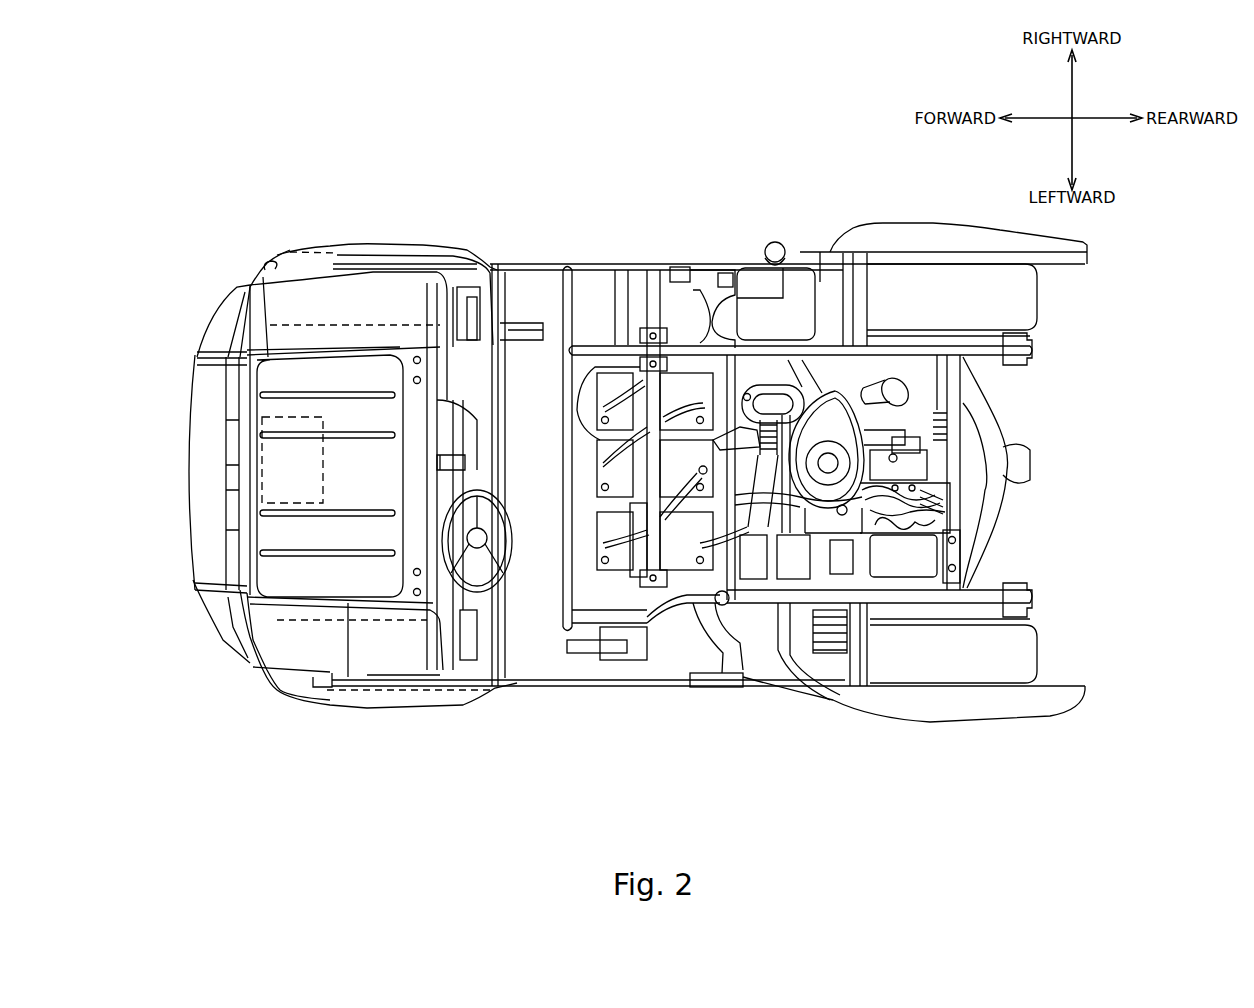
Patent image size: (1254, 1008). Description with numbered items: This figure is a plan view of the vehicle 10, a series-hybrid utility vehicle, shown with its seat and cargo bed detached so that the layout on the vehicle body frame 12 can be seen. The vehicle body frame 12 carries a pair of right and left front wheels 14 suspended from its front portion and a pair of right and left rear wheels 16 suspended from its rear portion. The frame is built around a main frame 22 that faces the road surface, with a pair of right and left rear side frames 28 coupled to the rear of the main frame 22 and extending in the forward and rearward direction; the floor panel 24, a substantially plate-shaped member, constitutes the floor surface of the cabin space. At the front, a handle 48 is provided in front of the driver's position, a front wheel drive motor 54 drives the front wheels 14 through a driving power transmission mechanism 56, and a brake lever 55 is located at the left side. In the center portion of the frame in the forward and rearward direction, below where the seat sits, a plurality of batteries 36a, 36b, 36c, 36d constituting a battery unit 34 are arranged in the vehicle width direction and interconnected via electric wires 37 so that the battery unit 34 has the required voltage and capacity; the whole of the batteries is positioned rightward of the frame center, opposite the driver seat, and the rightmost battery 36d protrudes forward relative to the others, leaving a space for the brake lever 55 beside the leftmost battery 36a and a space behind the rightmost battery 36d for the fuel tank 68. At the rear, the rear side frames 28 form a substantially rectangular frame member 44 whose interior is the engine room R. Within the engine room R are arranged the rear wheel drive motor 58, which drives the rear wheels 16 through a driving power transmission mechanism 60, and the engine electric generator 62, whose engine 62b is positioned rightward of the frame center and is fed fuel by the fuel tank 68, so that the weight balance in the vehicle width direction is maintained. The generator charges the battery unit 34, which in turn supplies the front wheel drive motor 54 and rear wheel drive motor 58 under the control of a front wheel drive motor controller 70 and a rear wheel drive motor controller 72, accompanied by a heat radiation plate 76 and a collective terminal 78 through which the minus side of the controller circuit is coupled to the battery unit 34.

The vehicle 10 is at (240, 106).
The vehicle body frame 12 is at (625, 233).
The front wheels 14 is at (300, 290).
The rear wheels 16 is at (1023, 297).
The main frame 22 is at (562, 258).
The floor panel 24 is at (535, 290).
The rear side frames 28 is at (977, 357).
The battery unit 34 is at (672, 393).
The battery 36a is at (610, 527).
The battery 36b is at (607, 452).
The battery 36c is at (613, 387).
The battery 36d is at (590, 303).
The electric wires 37 is at (610, 543).
The frame member 44 is at (985, 340).
The handle 48 is at (285, 380).
The front wheel drive motor 54 is at (255, 470).
The brake lever 55 is at (583, 645).
The driving power transmission mechanism 56 is at (240, 493).
The rear wheel drive motor 58 is at (925, 510).
The driving power transmission mechanism 60 is at (910, 468).
The engine electric generator 62 is at (843, 402).
The engine 62b is at (833, 403).
The fuel tank 68 is at (800, 283).
The front wheel drive motor controller 70 is at (773, 567).
The rear wheel drive motor controller 72 is at (897, 563).
The heat radiation plate 76 is at (818, 575).
The collective terminal 78 is at (847, 563).
The engine room R is at (893, 372).